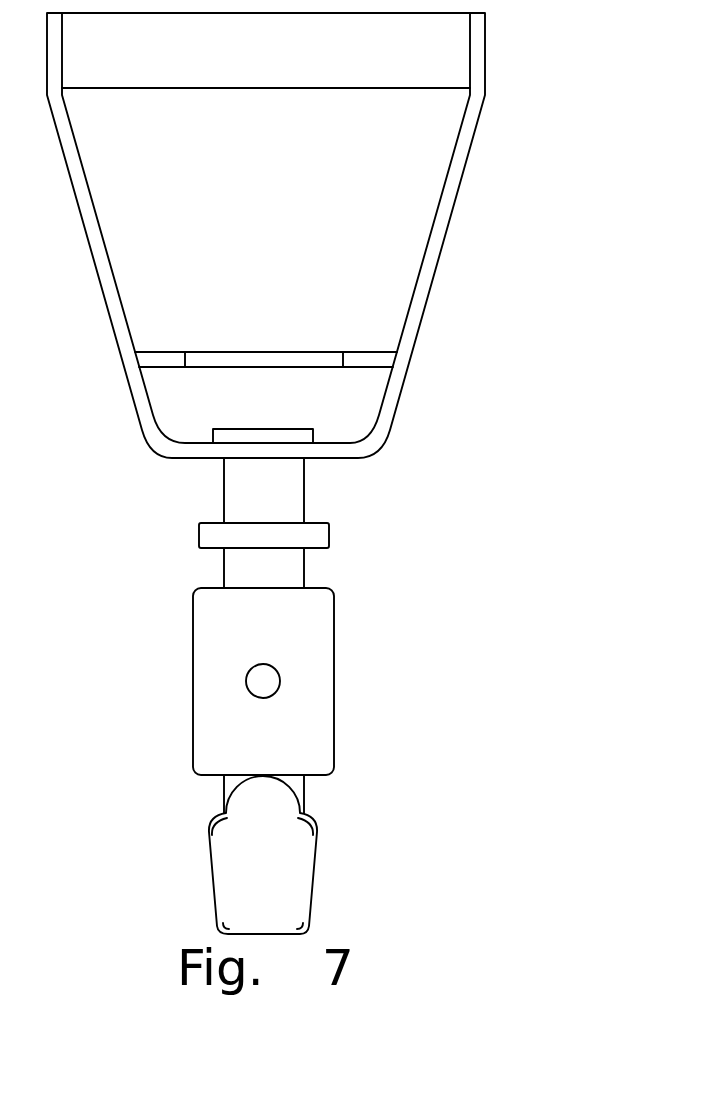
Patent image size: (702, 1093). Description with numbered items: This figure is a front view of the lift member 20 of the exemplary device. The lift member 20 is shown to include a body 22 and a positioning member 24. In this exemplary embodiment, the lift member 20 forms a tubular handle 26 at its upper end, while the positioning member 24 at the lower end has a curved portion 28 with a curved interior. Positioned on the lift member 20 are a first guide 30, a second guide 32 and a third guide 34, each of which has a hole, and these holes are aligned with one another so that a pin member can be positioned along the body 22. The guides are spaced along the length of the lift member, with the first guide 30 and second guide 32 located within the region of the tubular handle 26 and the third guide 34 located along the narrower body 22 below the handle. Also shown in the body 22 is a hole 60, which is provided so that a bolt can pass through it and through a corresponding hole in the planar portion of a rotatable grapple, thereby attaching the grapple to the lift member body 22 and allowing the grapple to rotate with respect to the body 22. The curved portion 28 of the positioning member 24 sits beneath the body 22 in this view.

The lift member 20 is at (481, 175).
The body 22 is at (224, 491).
The positioning member 24 is at (224, 795).
The tubular handle 26 is at (265, 38).
The curved portion 28 is at (314, 868).
The first guide 30 is at (260, 352).
The second guide 32 is at (295, 429).
The third guide 34 is at (304, 523).
The hole 60 is at (275, 693).